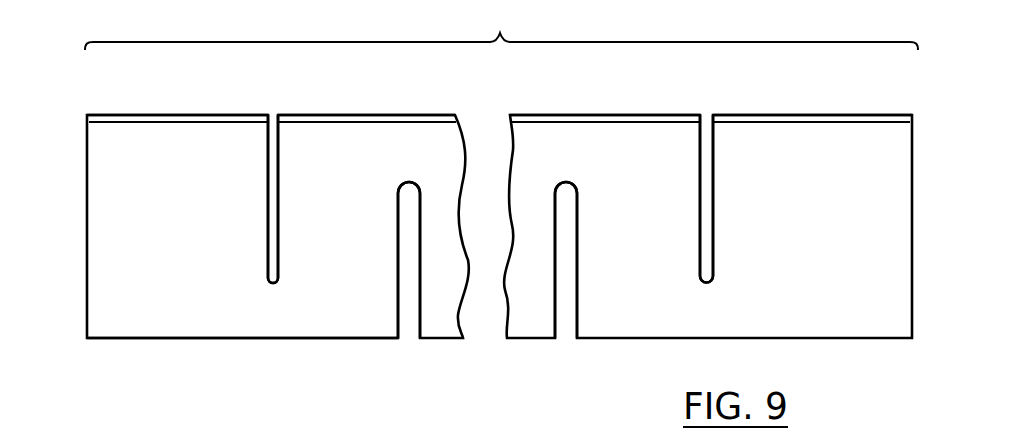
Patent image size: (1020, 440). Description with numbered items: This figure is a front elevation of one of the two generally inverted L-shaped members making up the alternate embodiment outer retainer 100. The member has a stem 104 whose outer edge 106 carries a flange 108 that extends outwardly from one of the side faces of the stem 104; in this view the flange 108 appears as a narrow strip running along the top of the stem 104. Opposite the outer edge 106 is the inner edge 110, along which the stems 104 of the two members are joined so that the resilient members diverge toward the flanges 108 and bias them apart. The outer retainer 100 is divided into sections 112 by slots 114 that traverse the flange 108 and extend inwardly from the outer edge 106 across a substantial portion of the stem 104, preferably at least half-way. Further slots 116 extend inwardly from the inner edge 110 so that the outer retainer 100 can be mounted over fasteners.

The outer retainer 100 is at (501, 27).
The stem 104 is at (211, 253).
The outer edge 106 is at (87, 115).
The flange 108 is at (132, 123).
The inner edge 110 is at (217, 340).
The section 112 is at (175, 138).
The slot 114 is at (273, 106).
The further slot 116 is at (407, 352).